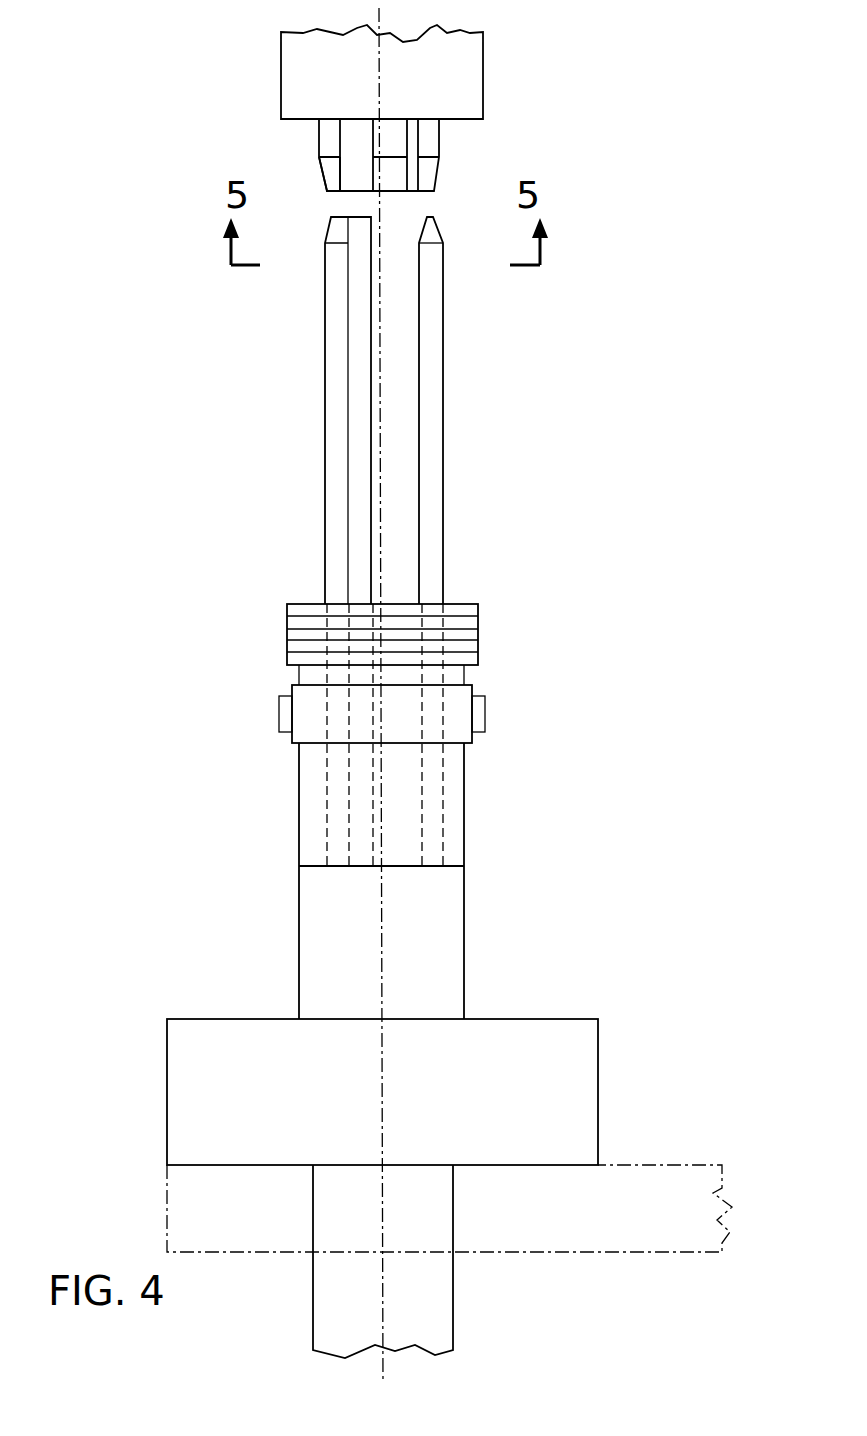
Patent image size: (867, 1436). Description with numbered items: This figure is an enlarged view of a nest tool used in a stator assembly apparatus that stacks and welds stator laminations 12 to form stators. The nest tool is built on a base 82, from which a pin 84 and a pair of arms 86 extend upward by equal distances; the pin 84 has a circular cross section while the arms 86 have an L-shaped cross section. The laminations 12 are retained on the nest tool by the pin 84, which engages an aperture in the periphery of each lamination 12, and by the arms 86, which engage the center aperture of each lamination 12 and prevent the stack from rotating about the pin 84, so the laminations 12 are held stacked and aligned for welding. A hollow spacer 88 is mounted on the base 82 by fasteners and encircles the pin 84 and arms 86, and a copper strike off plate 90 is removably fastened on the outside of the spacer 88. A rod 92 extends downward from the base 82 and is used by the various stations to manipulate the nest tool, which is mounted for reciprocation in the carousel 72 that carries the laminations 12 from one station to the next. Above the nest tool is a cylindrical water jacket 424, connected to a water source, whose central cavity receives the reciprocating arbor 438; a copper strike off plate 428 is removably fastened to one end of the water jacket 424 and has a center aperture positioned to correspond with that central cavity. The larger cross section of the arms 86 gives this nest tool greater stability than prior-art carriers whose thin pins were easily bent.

The water jacket 424 is at (468, 89).
The arbor 438 is at (318, 152).
The strike off plate 428 is at (455, 122).
The arms 86 is at (337, 487).
The pin 84 is at (437, 479).
The stator laminations 12 is at (478, 640).
The strike off plate 90 is at (453, 738).
The spacer 88 is at (464, 823).
The base 82 is at (458, 928).
The carousel 72 is at (647, 1168).
The rod 92 is at (435, 1263).